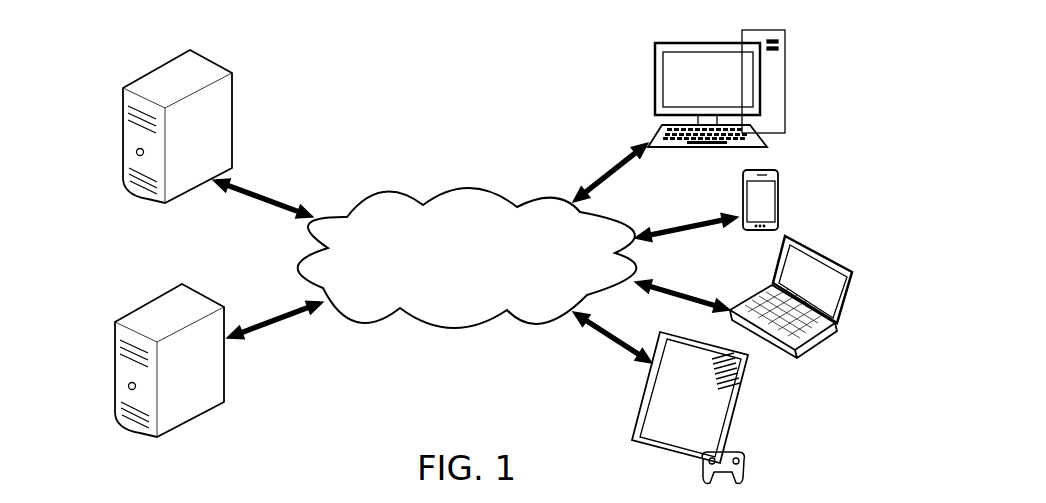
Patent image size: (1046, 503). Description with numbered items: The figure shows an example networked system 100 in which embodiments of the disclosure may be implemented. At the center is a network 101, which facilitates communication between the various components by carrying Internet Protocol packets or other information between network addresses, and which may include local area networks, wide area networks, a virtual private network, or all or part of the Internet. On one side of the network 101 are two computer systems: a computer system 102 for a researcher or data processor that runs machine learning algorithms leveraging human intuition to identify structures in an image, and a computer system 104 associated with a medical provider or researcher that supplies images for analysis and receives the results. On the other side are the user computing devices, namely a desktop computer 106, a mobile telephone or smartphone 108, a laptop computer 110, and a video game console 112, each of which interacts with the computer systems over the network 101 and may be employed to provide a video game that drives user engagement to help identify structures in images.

The networked system 100 is at (381, 66).
The network 101 is at (458, 187).
The computer system 102 is at (135, 82).
The computer system 104 is at (137, 308).
The desktop computer 106 is at (788, 68).
The mobile telephone or smartphone 108 is at (780, 203).
The laptop computer 110 is at (837, 330).
The video game console 112 is at (733, 397).